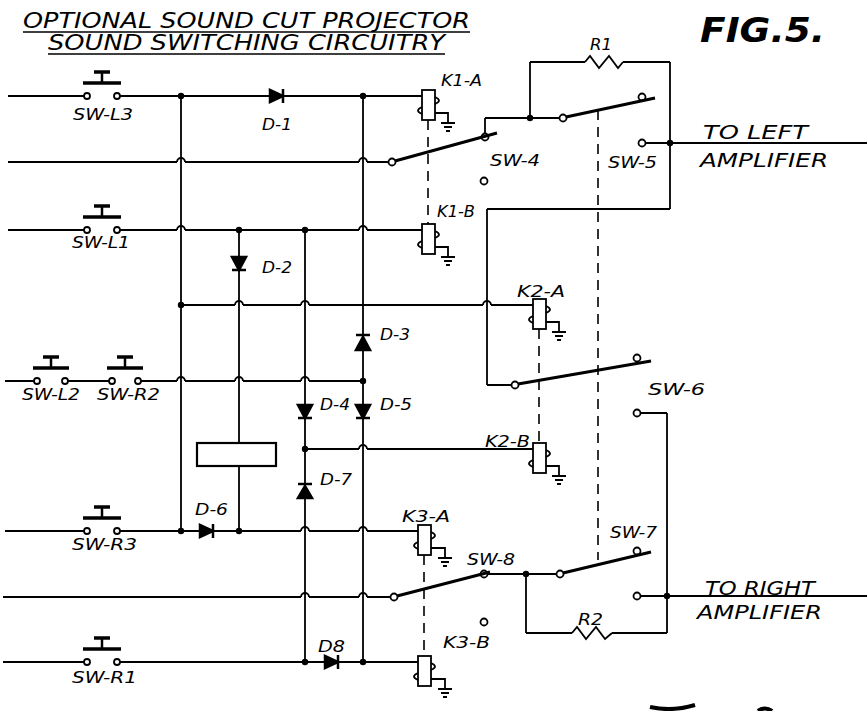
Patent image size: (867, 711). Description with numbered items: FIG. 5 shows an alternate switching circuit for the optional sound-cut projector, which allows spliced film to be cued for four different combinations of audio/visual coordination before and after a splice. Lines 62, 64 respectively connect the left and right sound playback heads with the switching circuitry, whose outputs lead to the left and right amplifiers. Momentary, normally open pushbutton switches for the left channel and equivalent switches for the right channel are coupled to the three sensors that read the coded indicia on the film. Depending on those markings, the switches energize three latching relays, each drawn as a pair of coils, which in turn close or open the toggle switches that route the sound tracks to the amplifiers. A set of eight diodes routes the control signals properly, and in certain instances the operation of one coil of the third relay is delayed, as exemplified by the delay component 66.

The line 62 is at (255, 163).
The line 64 is at (258, 598).
The delay component 66 is at (257, 443).